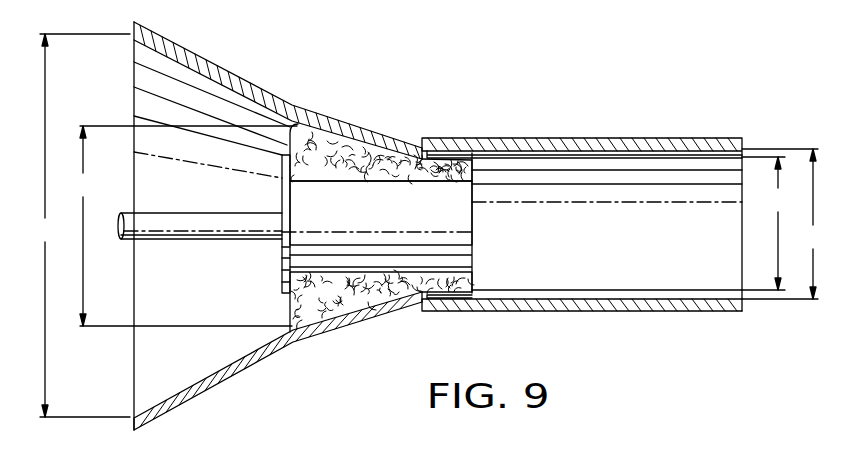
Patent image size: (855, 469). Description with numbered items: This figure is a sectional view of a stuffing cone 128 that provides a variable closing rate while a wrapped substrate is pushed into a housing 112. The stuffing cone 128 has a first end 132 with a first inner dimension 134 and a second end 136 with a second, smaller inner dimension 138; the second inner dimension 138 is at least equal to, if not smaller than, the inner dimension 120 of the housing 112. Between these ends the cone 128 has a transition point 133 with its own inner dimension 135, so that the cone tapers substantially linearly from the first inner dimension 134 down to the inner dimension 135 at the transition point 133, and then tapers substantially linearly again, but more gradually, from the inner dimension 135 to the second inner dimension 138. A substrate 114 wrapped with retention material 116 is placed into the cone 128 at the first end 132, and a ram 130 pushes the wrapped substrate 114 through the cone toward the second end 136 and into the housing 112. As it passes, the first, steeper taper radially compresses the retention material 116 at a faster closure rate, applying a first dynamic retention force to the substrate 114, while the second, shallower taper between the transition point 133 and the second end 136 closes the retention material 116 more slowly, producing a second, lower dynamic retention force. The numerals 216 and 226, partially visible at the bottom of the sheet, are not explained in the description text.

The housing 112 is at (595, 137).
The substrate 114 is at (360, 225).
The retention material 116 is at (348, 151).
The inner dimension of housing 120 is at (787, 224).
The stuffing cone 128 is at (271, 87).
The ram 130 is at (176, 241).
The first end 132 is at (134, 430).
The transition point 133 is at (303, 343).
The first inner dimension 134 is at (78, 225).
The inner dimension of transition point 135 is at (181, 226).
The second end 136 is at (418, 293).
The second inner dimension 138 is at (769, 223).
The element (partially visible) 216 is at (298, 464).
The element (partially visible) 226 is at (409, 464).